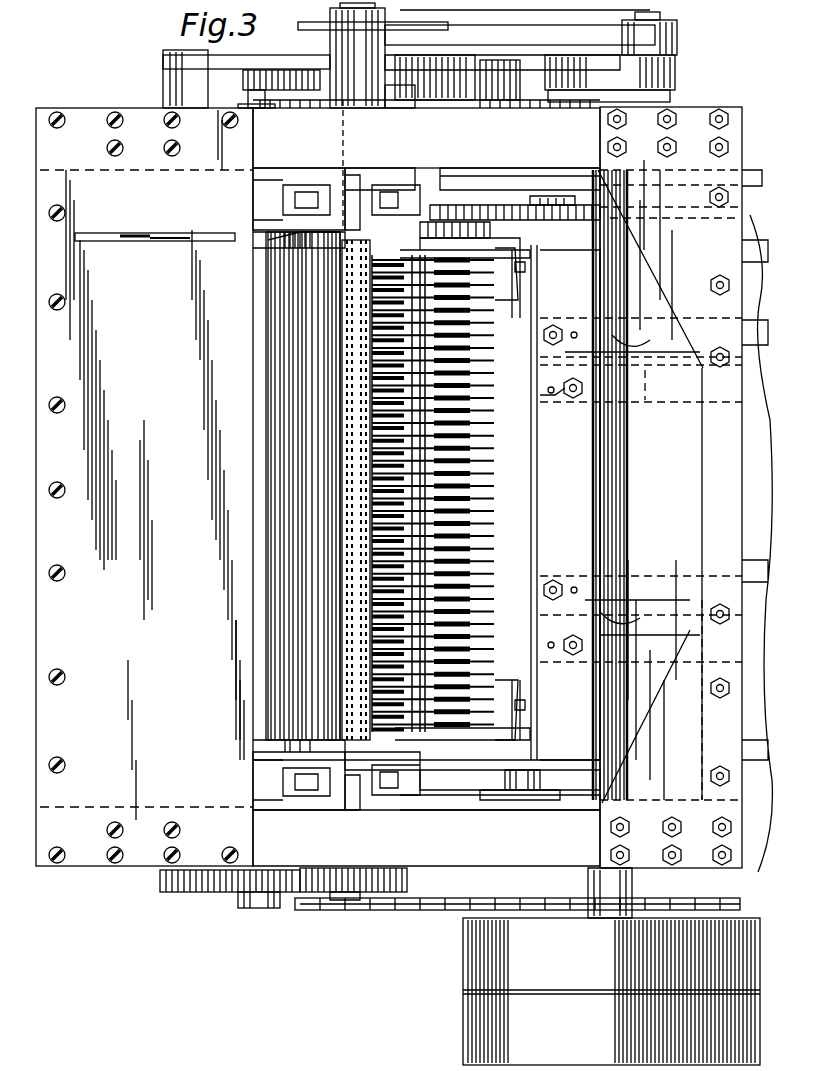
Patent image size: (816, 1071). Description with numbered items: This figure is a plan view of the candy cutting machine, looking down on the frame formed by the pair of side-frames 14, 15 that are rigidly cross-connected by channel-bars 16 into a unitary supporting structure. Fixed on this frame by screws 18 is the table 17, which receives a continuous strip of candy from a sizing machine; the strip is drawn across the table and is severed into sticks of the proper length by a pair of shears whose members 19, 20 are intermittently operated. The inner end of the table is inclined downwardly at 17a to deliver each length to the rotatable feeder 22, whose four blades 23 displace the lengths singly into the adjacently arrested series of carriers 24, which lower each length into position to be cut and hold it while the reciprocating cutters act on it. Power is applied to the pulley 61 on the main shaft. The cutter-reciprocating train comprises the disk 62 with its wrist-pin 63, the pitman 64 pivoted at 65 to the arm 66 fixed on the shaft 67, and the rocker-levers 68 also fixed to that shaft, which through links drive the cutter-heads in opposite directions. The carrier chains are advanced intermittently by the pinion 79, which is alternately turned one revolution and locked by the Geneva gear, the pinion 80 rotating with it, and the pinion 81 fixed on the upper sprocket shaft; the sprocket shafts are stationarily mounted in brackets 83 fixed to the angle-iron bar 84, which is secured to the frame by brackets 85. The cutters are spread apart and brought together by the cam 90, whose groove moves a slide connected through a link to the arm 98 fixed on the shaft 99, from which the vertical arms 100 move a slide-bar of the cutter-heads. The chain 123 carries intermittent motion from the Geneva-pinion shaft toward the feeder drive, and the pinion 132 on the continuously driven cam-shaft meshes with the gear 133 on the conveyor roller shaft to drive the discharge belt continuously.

The side-frame 14 is at (426, 813).
The side-frame 15 is at (426, 165).
The channel-bars 16 is at (656, 489).
The table 17 is at (144, 487).
The inclined inner end of table 17a is at (256, 678).
The screws 18 is at (182, 150).
The shear member 19 is at (147, 218).
The shear member 20 is at (192, 238).
The rotatable feeder 22 is at (324, 268).
The blades 23 is at (304, 340).
The carriers 24 is at (472, 488).
The pulley 61 is at (611, 966).
The disk 62 is at (677, 72).
The wrist-pin 63 is at (662, 16).
The pitman 64 is at (682, 42).
The pivot 65 is at (422, 14).
The arm 66 is at (352, 75).
The shaft 67 is at (292, 237).
The rocker-levers 68 is at (264, 190).
The pinion 79 is at (487, 215).
The pinion 80 is at (492, 232).
The pinion 81 is at (374, 232).
The brackets 83 is at (522, 244).
The angle-iron bar 84 is at (565, 502).
The brackets 85 is at (322, 24).
The cam 90 is at (467, 88).
The arm 98 is at (170, 78).
The shaft 99 is at (627, 502).
The vertical arms 100 is at (542, 770).
The chain 123 is at (452, 910).
The pinion 132 is at (412, 876).
The gear 133 is at (212, 890).